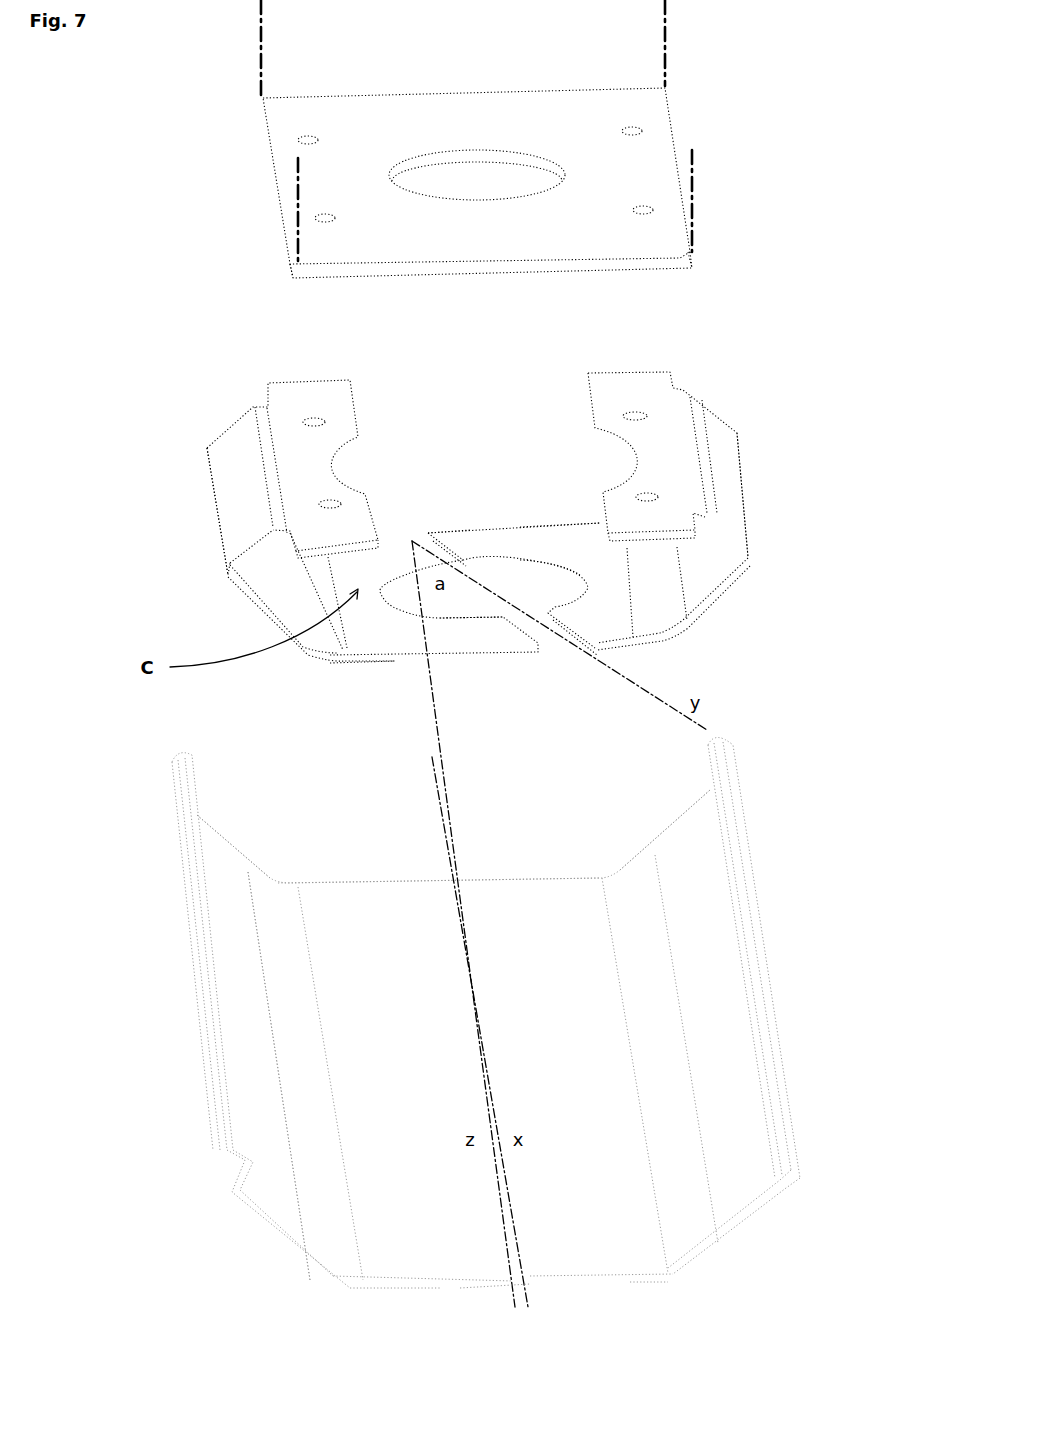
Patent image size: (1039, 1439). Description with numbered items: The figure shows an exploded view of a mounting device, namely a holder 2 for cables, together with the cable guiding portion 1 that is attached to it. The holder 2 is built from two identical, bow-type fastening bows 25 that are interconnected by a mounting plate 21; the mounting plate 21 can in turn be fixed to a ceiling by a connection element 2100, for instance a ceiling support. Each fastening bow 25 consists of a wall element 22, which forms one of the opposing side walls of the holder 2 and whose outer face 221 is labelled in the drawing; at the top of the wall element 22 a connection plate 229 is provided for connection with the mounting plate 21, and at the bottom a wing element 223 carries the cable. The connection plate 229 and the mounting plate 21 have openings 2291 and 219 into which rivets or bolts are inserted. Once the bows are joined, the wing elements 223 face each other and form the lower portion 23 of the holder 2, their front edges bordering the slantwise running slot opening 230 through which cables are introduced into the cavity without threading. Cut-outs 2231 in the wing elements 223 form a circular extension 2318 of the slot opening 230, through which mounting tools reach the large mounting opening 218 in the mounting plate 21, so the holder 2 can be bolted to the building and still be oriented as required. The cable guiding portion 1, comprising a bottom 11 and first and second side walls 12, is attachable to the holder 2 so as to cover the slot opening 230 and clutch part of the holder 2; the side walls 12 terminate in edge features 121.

The cable guiding portion 1 is at (396, 835).
The bottom 11 is at (370, 925).
The side walls 12 is at (218, 857).
The side wall hook 121 is at (255, 1165).
The holder 2 is at (777, 65).
The mounting plate 21 is at (350, 146).
The mounting opening 218 is at (472, 183).
The openings 219 is at (627, 128).
The connection element 2100 is at (258, 43).
The wall element 22 is at (227, 447).
The bracket side wall 221 is at (198, 465).
The wing element 223 is at (548, 545).
The cut-outs 2231 is at (540, 582).
The circular extension 2318 is at (487, 597).
The connection plate 229 is at (287, 395).
The openings 2291 is at (636, 412).
The slot opening 230 is at (430, 570).
The lower portion 23 is at (655, 668).
The fastening bows 25 is at (240, 357).